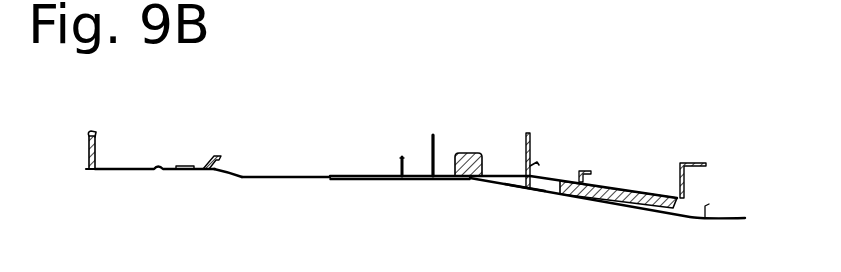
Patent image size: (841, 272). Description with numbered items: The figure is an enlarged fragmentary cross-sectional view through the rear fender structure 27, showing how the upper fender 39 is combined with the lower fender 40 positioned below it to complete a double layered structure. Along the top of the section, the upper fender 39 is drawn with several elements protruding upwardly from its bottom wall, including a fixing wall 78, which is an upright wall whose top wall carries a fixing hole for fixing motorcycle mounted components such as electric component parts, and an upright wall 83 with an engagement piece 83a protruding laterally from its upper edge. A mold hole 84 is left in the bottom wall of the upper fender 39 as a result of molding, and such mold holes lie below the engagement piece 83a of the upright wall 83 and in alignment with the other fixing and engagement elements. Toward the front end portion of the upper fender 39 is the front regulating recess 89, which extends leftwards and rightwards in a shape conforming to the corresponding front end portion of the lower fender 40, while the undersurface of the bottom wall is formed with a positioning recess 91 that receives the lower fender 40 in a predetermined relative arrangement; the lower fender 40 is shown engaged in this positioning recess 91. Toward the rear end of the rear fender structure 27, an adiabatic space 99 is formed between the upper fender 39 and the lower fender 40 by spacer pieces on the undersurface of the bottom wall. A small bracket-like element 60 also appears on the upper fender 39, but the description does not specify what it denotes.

The rear fender structure 27 is at (257, 165).
The upper fender 39 is at (289, 173).
The lower fender 40 is at (516, 188).
The bracket 60 is at (185, 165).
The fixing wall 78 is at (473, 153).
The upright wall 83 is at (531, 140).
The engagement piece 83a is at (538, 164).
The mold hole 84 is at (533, 186).
The front regulating recess 89 is at (331, 176).
The positioning recess 91 is at (342, 181).
The adiabatic space 99 is at (563, 195).